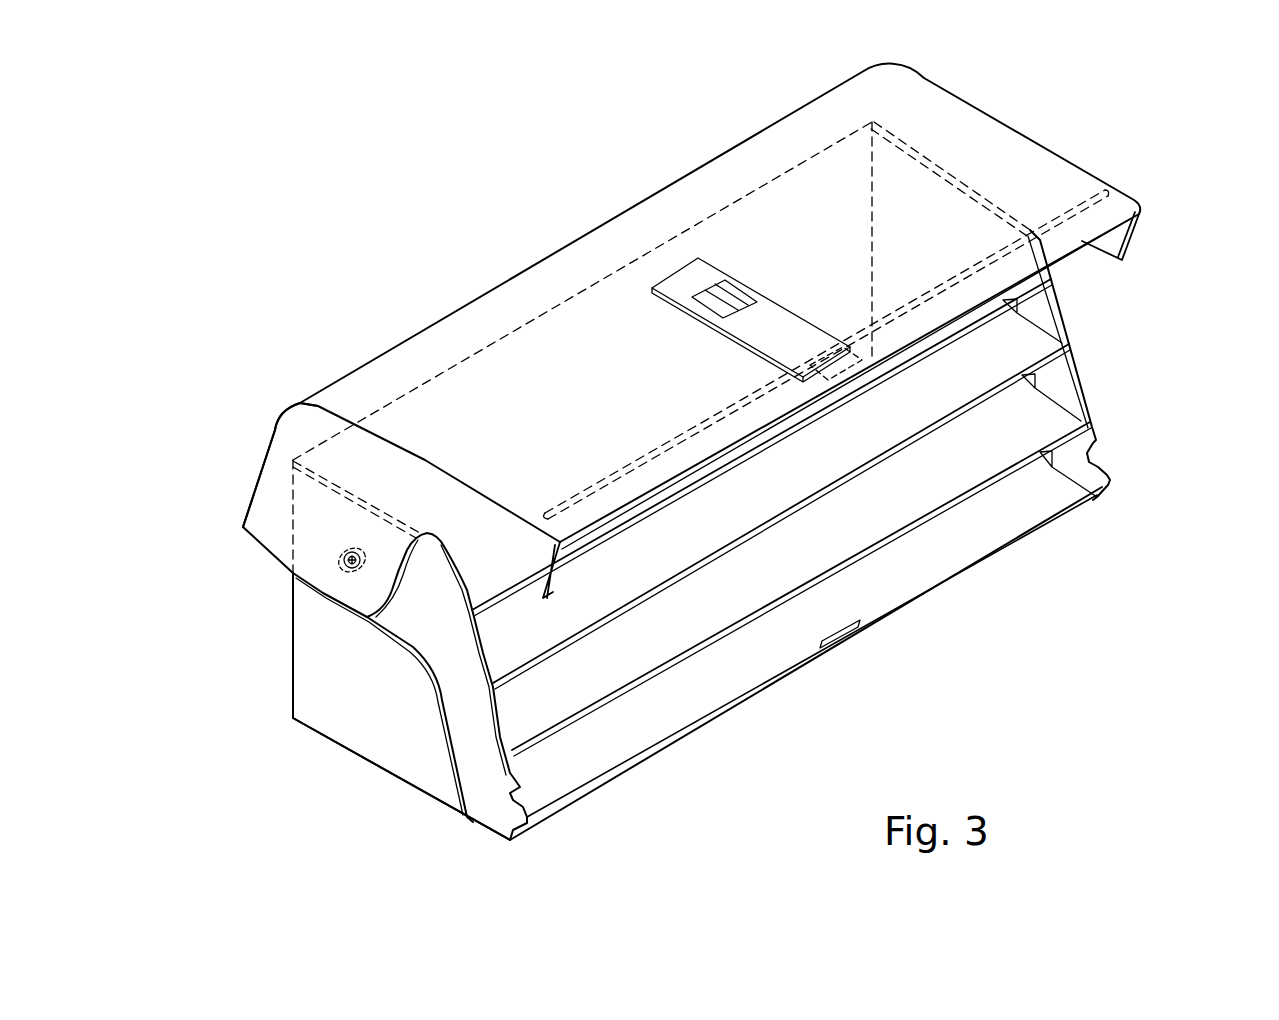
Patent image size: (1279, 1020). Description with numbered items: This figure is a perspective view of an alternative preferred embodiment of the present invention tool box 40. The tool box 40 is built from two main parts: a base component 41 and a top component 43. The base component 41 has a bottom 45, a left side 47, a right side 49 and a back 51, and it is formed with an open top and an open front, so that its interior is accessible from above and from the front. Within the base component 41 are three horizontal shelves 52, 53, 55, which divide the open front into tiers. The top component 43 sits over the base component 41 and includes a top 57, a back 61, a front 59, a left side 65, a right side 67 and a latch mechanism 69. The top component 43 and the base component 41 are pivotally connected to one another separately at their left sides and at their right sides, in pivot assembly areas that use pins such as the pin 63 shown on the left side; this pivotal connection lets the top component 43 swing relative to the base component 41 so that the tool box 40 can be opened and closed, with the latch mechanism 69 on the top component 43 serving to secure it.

The tool box 40 is at (1193, 65).
The base component 41 is at (669, 535).
The top component 43 is at (430, 282).
The bottom 45 is at (934, 575).
The left side 47 is at (333, 722).
The right side 49 is at (1067, 377).
The back 51 is at (293, 673).
The horizontal shelf 52 is at (670, 670).
The horizontal shelf 53 is at (590, 630).
The horizontal shelf 55 is at (507, 590).
The top 57 is at (255, 483).
The front 59 is at (602, 303).
The back 61 is at (260, 550).
The pin 63 is at (337, 565).
The left side 65 is at (513, 537).
The right side 67 is at (1130, 245).
The latch mechanism 69 is at (770, 313).